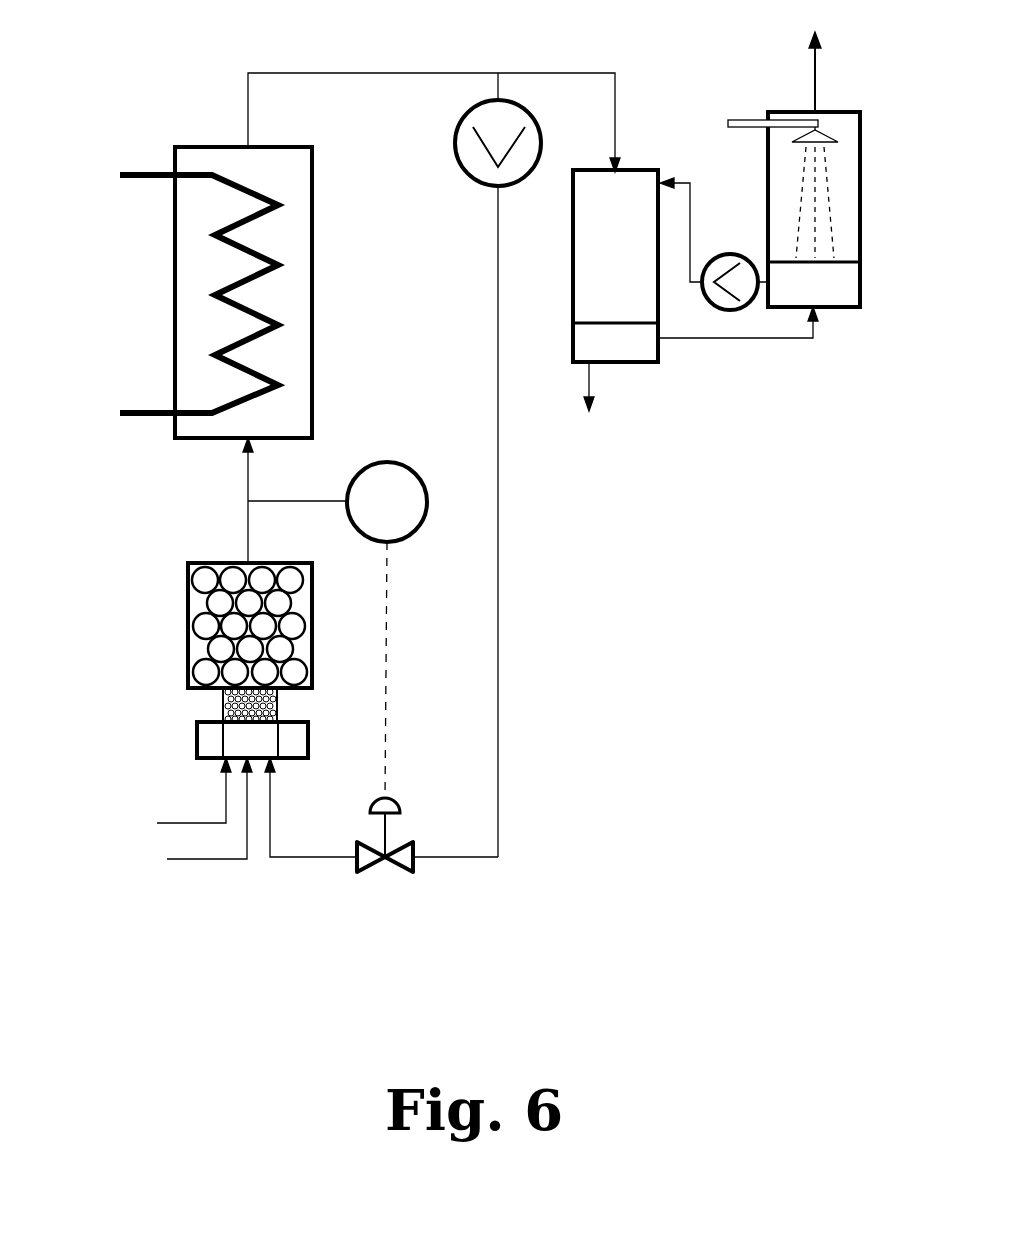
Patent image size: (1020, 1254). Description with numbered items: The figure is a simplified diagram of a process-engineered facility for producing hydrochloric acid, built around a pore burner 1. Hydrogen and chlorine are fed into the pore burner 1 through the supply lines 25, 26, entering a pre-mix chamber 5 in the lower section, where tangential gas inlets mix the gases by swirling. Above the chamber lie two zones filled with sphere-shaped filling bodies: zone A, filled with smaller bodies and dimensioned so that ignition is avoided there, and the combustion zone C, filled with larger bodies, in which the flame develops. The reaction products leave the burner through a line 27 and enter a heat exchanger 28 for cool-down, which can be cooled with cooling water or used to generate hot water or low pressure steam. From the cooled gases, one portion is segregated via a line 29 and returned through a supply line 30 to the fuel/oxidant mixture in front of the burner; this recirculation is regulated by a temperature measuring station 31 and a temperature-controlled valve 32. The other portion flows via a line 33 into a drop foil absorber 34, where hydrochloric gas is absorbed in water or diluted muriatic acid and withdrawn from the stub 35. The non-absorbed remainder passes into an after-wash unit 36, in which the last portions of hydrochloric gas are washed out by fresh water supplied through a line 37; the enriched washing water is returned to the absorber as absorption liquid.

The pore burner 1 is at (136, 612).
The combustion zone C is at (295, 625).
The zone A is at (223, 705).
The pre-mix chamber 5 is at (203, 742).
The supply line 25 is at (166, 822).
The supply line 26 is at (205, 862).
The line 27 is at (245, 502).
The heat exchanger 28 is at (290, 155).
The line 29 is at (492, 88).
The supply line 30 is at (290, 860).
The measuring station 31 is at (385, 475).
The temperature-controlled valve 32 is at (365, 860).
The line 33 is at (565, 73).
The drop foil absorber 34 is at (585, 187).
The stub 35 is at (586, 383).
The after-wash unit 36 is at (782, 172).
The line 37 is at (740, 120).